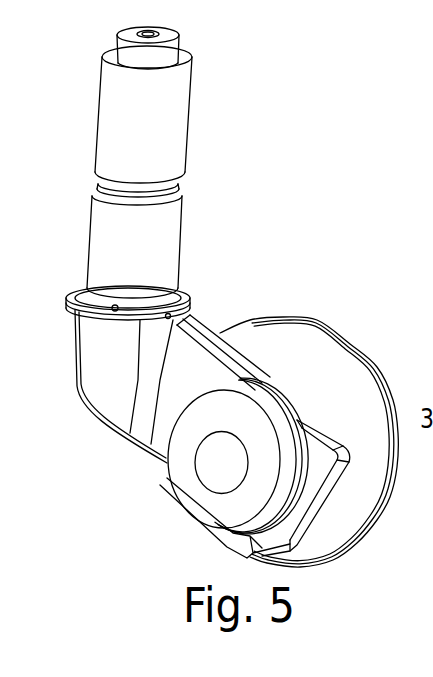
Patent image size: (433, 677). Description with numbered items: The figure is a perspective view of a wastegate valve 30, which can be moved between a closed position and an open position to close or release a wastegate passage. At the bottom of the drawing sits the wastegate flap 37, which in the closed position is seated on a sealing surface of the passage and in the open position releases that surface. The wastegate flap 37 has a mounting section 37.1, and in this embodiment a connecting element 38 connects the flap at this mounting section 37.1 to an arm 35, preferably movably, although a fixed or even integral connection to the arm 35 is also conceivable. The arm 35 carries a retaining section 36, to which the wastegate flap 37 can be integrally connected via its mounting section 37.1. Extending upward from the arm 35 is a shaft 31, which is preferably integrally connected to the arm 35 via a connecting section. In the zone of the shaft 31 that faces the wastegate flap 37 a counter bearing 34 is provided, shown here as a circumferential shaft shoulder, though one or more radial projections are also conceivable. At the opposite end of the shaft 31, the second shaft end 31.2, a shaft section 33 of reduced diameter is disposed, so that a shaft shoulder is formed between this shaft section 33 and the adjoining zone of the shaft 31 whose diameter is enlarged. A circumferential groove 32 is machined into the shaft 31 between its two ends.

The wastegate valve 30 is at (250, 224).
The shaft 31 is at (176, 102).
The second shaft end 31.2 is at (124, 108).
The circumferential groove 32 is at (179, 183).
The shaft section of reduced diameter 33 is at (186, 42).
The counter bearing 34 is at (174, 291).
The arm 35 is at (193, 353).
The retaining section 36 is at (259, 370).
The wastegate flap 37 is at (330, 390).
The mounting section 37.1 is at (217, 478).
The connecting element 38 is at (178, 450).